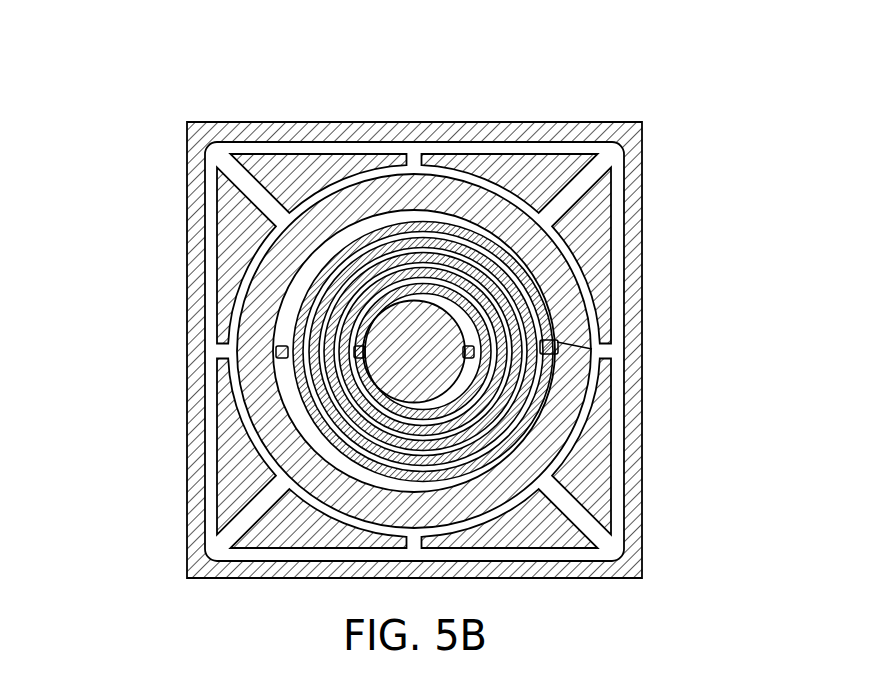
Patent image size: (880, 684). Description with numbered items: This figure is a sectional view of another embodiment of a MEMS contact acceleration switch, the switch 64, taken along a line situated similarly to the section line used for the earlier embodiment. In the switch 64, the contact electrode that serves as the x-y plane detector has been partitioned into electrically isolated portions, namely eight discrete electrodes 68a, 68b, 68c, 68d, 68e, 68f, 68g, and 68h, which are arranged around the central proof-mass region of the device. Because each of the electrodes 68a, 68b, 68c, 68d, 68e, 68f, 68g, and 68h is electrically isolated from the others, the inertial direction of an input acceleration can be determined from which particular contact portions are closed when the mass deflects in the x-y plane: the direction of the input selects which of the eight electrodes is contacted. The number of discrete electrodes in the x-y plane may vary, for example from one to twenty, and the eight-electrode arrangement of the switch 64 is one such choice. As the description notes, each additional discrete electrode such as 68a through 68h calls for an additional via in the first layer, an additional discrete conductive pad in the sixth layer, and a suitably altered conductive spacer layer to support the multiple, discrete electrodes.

The switch 64 is at (690, 69).
The electrode 68a is at (289, 178).
The electrode 68b is at (545, 180).
The electrode 68c is at (600, 233).
The electrode 68d is at (587, 488).
The electrode 68e is at (527, 547).
The electrode 68f is at (293, 547).
The electrode 68g is at (227, 488).
The electrode 68h is at (227, 233).